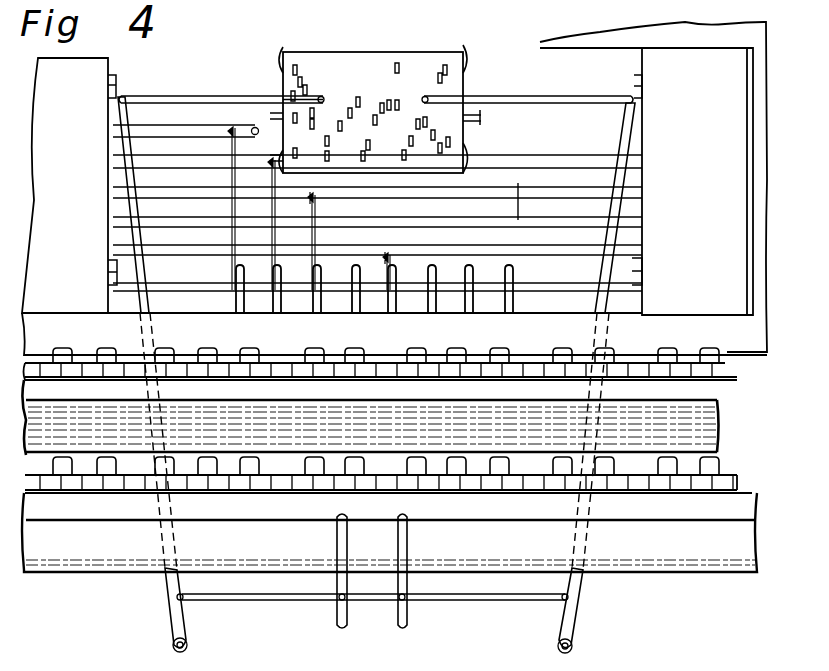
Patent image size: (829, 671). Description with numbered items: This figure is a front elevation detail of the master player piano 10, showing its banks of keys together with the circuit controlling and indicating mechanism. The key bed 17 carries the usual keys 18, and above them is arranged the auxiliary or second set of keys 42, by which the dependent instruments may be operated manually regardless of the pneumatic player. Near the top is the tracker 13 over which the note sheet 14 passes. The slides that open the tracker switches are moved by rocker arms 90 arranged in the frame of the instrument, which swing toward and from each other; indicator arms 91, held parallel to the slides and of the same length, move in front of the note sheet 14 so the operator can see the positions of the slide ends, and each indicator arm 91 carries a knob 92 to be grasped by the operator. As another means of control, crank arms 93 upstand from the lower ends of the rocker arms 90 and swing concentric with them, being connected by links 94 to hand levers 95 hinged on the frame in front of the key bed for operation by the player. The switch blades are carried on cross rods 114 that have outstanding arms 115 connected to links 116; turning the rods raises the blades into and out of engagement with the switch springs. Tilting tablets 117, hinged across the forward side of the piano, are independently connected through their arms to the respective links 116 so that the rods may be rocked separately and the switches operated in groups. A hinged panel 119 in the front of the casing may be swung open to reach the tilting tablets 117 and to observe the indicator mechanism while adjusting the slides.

The piano 10 is at (394, 334).
The tracker 13 is at (482, 118).
The note sheet 14 is at (447, 63).
The key bed 17 is at (389, 532).
The key 18 is at (528, 484).
The auxiliary key 42 is at (631, 366).
The rocker arm 90 is at (138, 294).
The indicator arm 91 is at (219, 96).
The knob 92 is at (395, 106).
The crank arm 93 is at (188, 629).
The link 94 is at (279, 601).
The hand lever 95 is at (397, 621).
The cross rod 114 is at (511, 180).
The outstanding arm 115 is at (313, 198).
The link 116 is at (228, 206).
The tilting tablet 117 is at (466, 270).
The hinged panel 119 is at (69, 185).